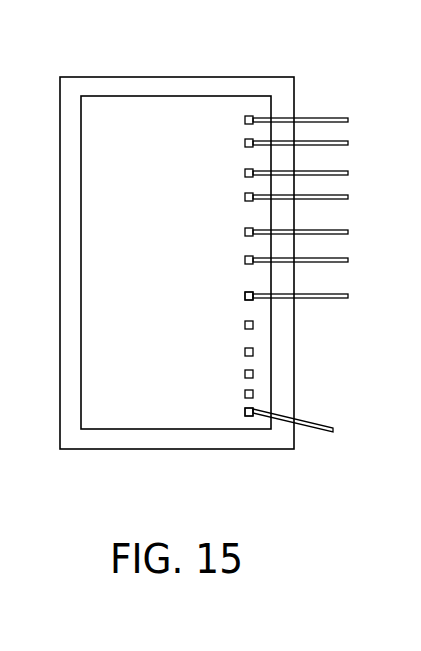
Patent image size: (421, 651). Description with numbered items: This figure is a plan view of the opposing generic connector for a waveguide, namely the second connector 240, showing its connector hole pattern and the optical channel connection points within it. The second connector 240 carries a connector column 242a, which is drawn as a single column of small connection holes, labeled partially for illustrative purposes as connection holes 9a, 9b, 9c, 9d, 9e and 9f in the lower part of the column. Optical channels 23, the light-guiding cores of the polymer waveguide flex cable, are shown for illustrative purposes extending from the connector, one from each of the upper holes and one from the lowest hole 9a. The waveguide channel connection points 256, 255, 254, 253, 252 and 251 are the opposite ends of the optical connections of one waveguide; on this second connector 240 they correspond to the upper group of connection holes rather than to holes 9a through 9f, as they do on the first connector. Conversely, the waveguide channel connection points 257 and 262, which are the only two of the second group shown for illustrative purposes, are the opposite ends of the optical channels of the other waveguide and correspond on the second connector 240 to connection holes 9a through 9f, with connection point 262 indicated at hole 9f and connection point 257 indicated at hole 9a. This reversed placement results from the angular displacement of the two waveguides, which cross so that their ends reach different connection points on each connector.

The second connector 240 is at (177, 77).
The connector column 242a is at (250, 95).
The optical channels 23 is at (333, 173).
The waveguide channel connection point 256 is at (245, 120).
The waveguide channel connection point 255 is at (245, 143).
The waveguide channel connection point 254 is at (245, 173).
The waveguide channel connection point 253 is at (245, 197).
The waveguide channel connection point 252 is at (245, 232).
The waveguide channel connection point 251 is at (245, 260).
The waveguide channel connection point 262 is at (238, 289).
The connection hole 9f is at (245, 296).
The connection hole 9e is at (245, 325).
The connection hole 9d is at (245, 352).
The connection hole 9c is at (245, 374).
The connection hole 9b is at (245, 394).
The connection hole 9a is at (245, 412).
The waveguide channel connection point 257 is at (250, 426).